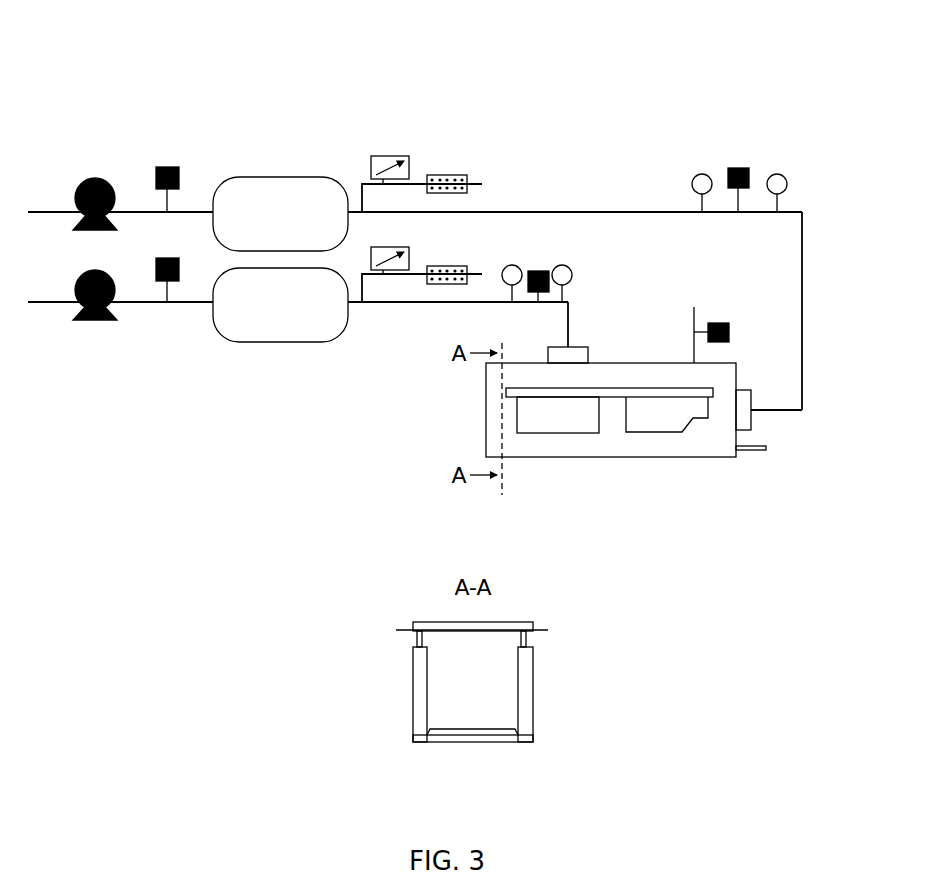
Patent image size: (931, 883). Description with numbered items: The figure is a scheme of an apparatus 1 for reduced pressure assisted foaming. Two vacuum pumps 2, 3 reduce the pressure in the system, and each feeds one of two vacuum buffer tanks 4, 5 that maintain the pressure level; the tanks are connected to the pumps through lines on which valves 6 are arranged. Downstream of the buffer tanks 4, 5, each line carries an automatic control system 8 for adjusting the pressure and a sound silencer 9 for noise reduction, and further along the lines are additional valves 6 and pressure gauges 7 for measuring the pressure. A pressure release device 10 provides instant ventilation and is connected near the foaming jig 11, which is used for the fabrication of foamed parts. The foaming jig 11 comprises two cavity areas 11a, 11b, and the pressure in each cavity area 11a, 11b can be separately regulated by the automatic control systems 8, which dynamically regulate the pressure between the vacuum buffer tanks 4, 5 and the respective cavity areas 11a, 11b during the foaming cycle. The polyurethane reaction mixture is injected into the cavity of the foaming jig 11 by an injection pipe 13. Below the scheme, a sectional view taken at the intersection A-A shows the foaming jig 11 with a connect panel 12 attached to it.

The apparatus 1 is at (609, 97).
The vacuum pump 2 is at (87, 180).
The vacuum pump 3 is at (75, 318).
The vacuum buffer tank 4 is at (250, 187).
The vacuum buffer tank 5 is at (233, 327).
The valve 6 is at (163, 167).
The pressure gauge 7 is at (557, 267).
The automatic control system 8 is at (385, 162).
The sound silencer 9 is at (447, 180).
The pressure release device 10 is at (729, 330).
The foaming jig 11 is at (639, 447).
The cavity area 11a is at (523, 378).
The cavity area 11b is at (715, 443).
The connect panel 12 is at (417, 638).
The injection pipe 13 is at (758, 452).